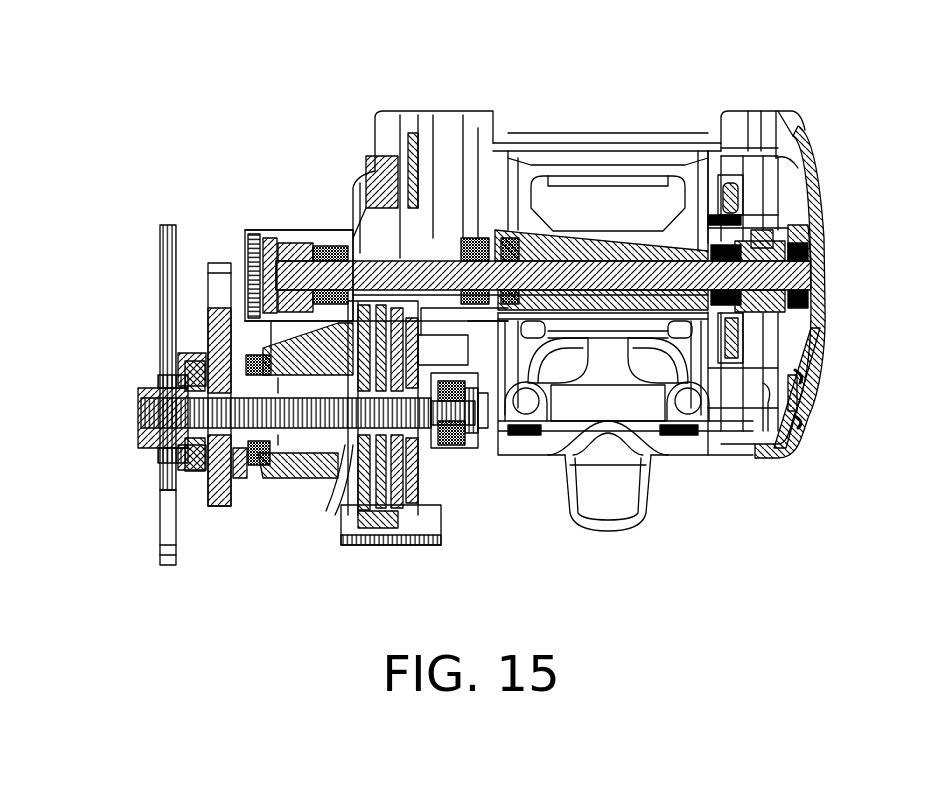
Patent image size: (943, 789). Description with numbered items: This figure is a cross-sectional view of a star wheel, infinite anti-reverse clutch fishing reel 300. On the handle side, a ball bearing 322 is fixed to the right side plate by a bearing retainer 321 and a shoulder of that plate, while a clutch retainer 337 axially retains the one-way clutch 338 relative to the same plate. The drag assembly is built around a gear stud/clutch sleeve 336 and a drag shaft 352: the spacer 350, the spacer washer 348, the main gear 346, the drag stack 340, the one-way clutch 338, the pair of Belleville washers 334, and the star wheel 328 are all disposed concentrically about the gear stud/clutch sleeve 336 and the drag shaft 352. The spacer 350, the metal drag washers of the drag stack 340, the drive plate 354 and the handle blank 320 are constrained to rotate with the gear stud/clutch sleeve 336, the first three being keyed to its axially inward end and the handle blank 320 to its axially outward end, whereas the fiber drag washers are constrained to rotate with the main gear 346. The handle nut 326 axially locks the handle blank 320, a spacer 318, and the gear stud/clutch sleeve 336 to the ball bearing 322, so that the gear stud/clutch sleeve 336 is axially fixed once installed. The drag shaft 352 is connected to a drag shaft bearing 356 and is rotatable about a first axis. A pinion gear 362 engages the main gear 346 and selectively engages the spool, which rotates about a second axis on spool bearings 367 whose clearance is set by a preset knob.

The fishing reel 300 is at (665, 52).
The spacer 318 is at (232, 355).
The handle blank 320 is at (210, 253).
The bearing retainer 321 is at (233, 473).
The ball bearing 322 is at (246, 455).
The handle nut 326 is at (183, 467).
The star wheel 328 is at (152, 262).
The Belleville washers 334 is at (440, 440).
The gear stud/clutch sleeve 336 is at (330, 438).
The clutch retainer 337 is at (317, 503).
The one-way clutch 338 is at (285, 470).
The drag stack 340 is at (398, 547).
The main gear 346 is at (418, 530).
The spacer washer 348 is at (323, 475).
The spacer 350 is at (328, 497).
The drag shaft 352 is at (185, 440).
The drive plate 354 is at (418, 475).
The drag shaft bearing 356 is at (470, 430).
The pinion gear 362 is at (347, 237).
The spool bearings 367 is at (462, 228).